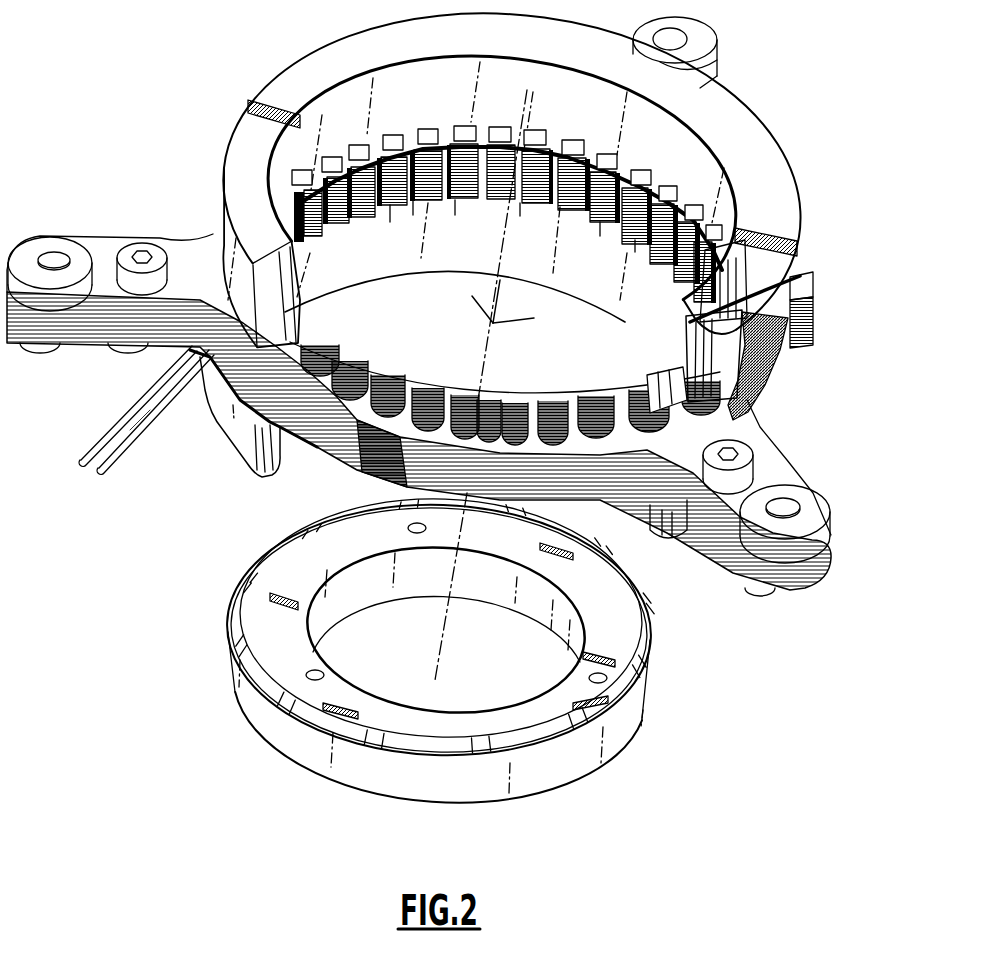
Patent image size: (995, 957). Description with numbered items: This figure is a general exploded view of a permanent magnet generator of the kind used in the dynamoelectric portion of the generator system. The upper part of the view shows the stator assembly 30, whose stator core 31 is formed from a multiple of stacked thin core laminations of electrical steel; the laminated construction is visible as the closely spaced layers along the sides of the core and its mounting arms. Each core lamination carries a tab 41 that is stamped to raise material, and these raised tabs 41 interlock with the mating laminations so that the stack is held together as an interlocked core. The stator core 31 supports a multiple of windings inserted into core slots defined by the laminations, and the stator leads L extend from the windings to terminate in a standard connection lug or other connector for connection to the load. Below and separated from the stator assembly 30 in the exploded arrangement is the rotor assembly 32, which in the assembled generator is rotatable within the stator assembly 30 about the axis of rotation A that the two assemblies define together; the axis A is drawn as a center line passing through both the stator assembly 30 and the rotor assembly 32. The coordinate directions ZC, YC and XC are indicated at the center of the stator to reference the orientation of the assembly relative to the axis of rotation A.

The stator assembly 30 is at (806, 218).
The stator core 31 is at (786, 400).
The rotor assembly 32 is at (675, 742).
The tab 41 is at (816, 317).
The stator leads L is at (152, 439).
The axis of rotation A is at (493, 357).
The Z axis ZC is at (515, 287).
The Y axis YC is at (465, 302).
The X axis XC is at (531, 320).